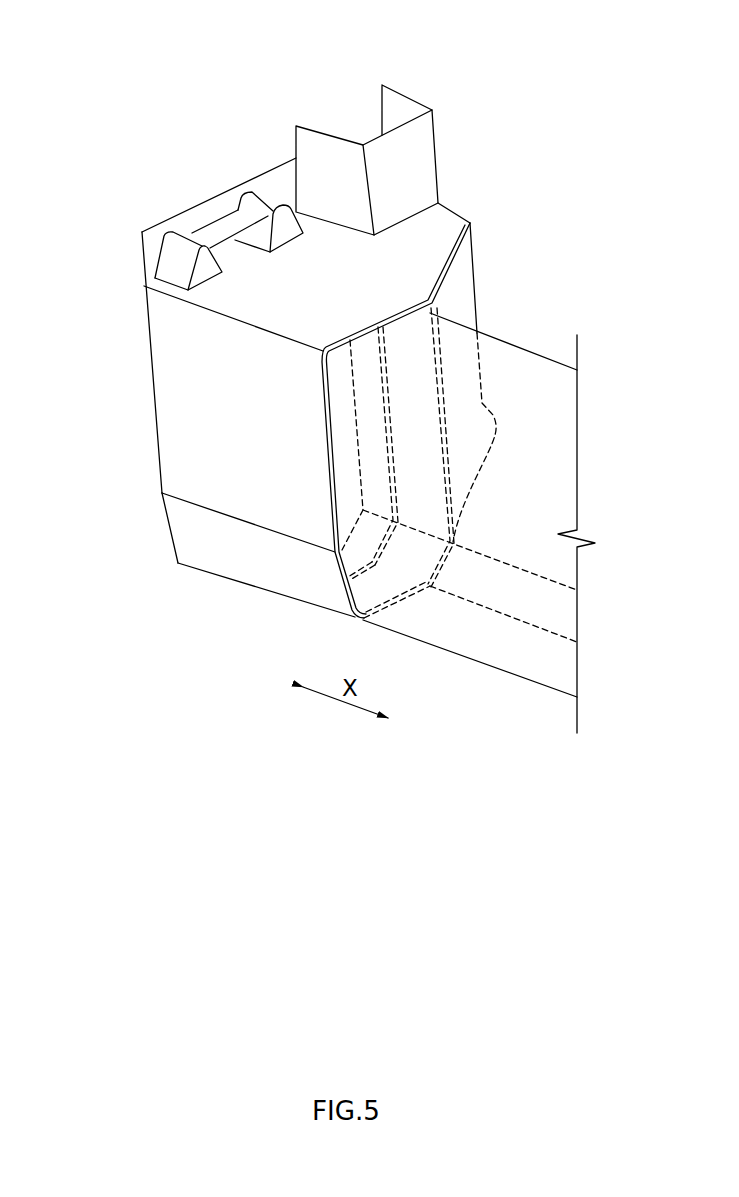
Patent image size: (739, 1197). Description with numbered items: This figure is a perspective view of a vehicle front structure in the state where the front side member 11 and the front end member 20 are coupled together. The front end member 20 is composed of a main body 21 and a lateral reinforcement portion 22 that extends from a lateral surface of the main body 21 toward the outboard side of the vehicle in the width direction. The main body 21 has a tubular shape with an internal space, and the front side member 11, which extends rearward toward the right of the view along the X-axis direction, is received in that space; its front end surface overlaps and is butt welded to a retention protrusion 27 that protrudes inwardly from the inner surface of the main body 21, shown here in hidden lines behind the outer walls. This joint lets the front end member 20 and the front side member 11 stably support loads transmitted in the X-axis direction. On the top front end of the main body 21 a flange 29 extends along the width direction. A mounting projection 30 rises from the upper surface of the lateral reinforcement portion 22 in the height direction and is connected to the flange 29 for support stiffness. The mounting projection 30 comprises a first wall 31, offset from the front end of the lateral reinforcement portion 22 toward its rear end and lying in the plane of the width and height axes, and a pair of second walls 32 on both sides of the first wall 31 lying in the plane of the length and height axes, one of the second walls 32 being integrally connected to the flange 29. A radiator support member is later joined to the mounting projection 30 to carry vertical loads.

The front side member 11 is at (523, 647).
The front end member 20 is at (128, 407).
The main body 21 is at (138, 530).
The lateral reinforcement portion 22 is at (465, 212).
The retention protrusion 27 is at (383, 348).
The flange 29 is at (208, 220).
The mounting projection 30 is at (410, 133).
The first wall 31 is at (412, 165).
The second walls 32 is at (400, 107).